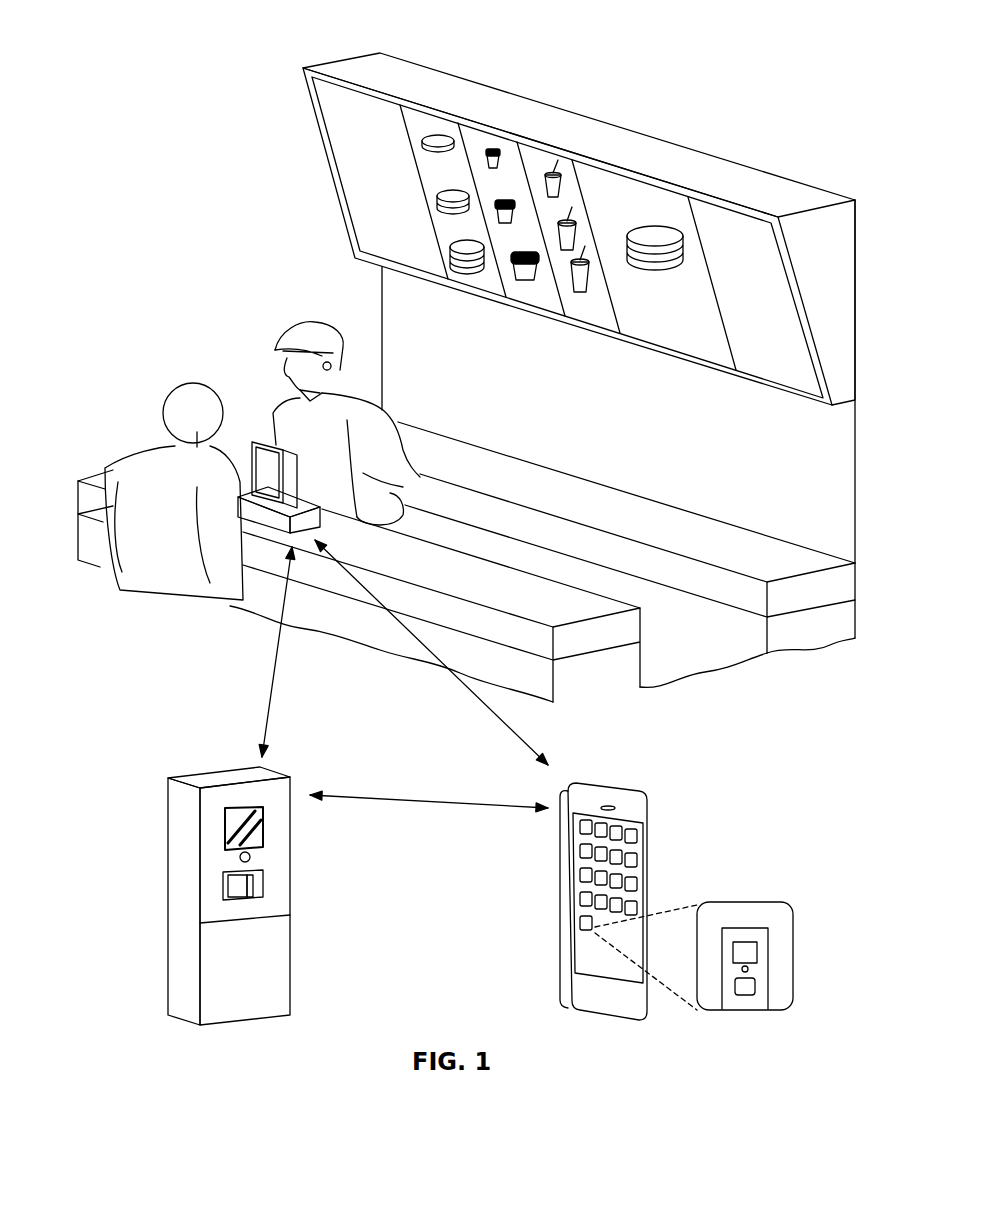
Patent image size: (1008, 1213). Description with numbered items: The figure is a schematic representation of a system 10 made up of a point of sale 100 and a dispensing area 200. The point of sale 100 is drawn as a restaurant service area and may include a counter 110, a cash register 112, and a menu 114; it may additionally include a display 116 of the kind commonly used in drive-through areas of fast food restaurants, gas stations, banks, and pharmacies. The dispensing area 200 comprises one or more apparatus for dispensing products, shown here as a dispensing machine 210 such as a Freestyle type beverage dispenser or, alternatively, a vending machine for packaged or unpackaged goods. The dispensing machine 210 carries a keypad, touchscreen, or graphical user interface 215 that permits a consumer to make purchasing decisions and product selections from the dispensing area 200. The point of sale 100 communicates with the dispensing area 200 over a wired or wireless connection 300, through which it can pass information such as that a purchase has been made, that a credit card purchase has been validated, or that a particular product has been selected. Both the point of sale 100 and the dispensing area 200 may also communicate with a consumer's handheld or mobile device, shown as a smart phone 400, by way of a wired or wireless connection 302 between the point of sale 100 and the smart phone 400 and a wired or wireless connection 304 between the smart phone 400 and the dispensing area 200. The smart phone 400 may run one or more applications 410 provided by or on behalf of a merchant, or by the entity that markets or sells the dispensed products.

The system 10 is at (147, 160).
The point of sale 100 is at (165, 362).
The counter 110 is at (577, 603).
The cash register 112 is at (268, 448).
The menu 114 is at (352, 188).
The display 116 is at (283, 450).
The dispensing area 200 is at (138, 750).
The dispensing machine 210 is at (187, 805).
The graphical user interface 215 is at (242, 847).
The connection 300 is at (272, 682).
The connection 302 is at (490, 713).
The connection 304 is at (430, 800).
The smart phone 400 is at (563, 903).
The application 410 is at (793, 950).